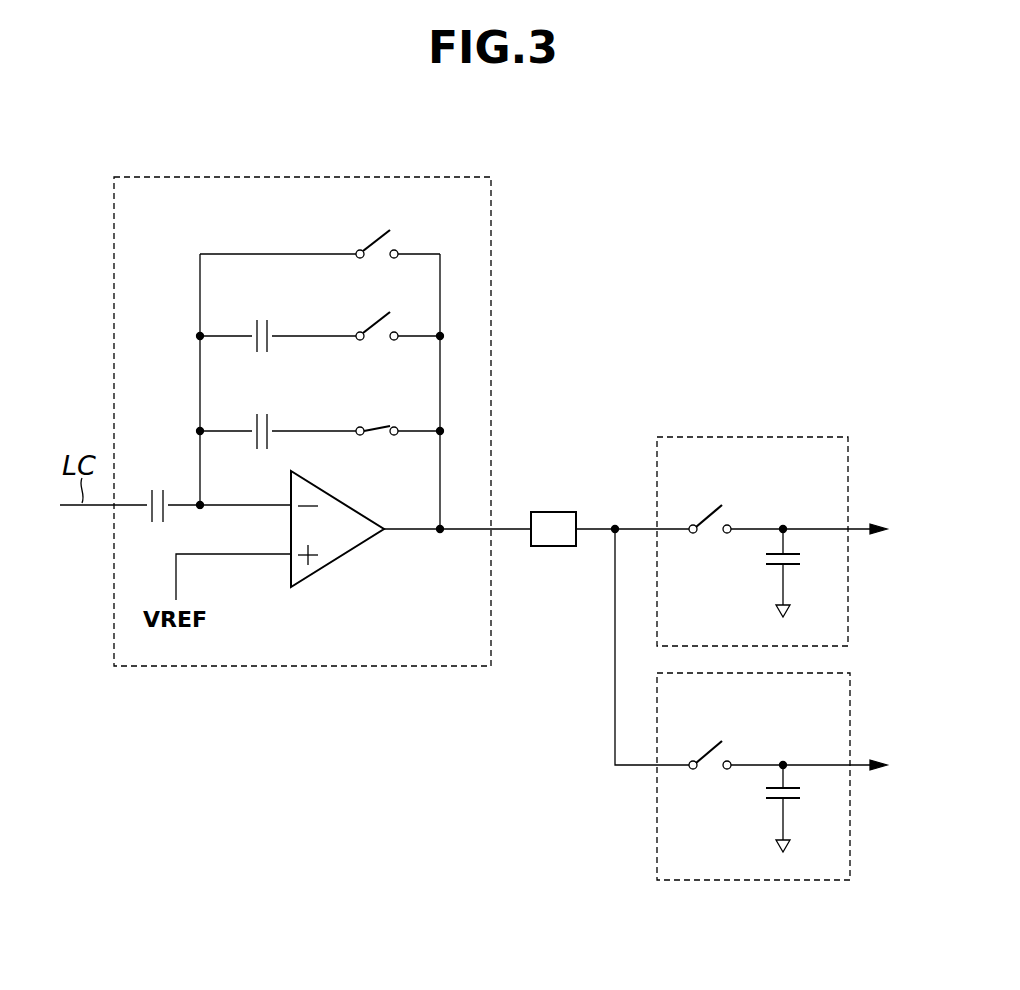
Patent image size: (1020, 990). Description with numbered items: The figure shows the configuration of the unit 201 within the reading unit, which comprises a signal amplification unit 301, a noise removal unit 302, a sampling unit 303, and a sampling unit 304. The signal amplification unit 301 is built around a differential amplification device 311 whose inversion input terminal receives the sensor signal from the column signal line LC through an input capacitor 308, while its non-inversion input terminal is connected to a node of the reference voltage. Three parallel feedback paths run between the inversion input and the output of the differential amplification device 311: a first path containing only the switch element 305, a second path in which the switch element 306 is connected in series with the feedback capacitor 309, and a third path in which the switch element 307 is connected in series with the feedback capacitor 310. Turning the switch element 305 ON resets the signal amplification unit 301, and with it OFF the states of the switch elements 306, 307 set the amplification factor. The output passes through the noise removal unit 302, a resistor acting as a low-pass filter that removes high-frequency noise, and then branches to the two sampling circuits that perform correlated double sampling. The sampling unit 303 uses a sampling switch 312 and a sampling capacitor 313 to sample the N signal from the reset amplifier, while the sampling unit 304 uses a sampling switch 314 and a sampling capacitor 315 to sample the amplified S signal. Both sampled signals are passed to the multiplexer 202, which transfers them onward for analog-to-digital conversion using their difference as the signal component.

The unit 201 is at (752, 205).
The multiplexer 202 is at (907, 648).
The signal amplification unit 301 is at (293, 177).
The noise removal unit 302 is at (556, 512).
The sampling unit 303 is at (773, 437).
The sampling unit 304 is at (657, 838).
The switch element 305 is at (372, 244).
The switch element 306 is at (372, 326).
The switch element 307 is at (378, 425).
The input capacitor 308 is at (158, 488).
The feedback capacitor 309 is at (262, 318).
The feedback capacitor 310 is at (262, 412).
The differential amplification device 311 is at (342, 556).
The sampling switch 312 is at (713, 507).
The sampling capacitor 313 is at (766, 557).
The sampling switch 314 is at (713, 743).
The sampling capacitor 315 is at (766, 794).